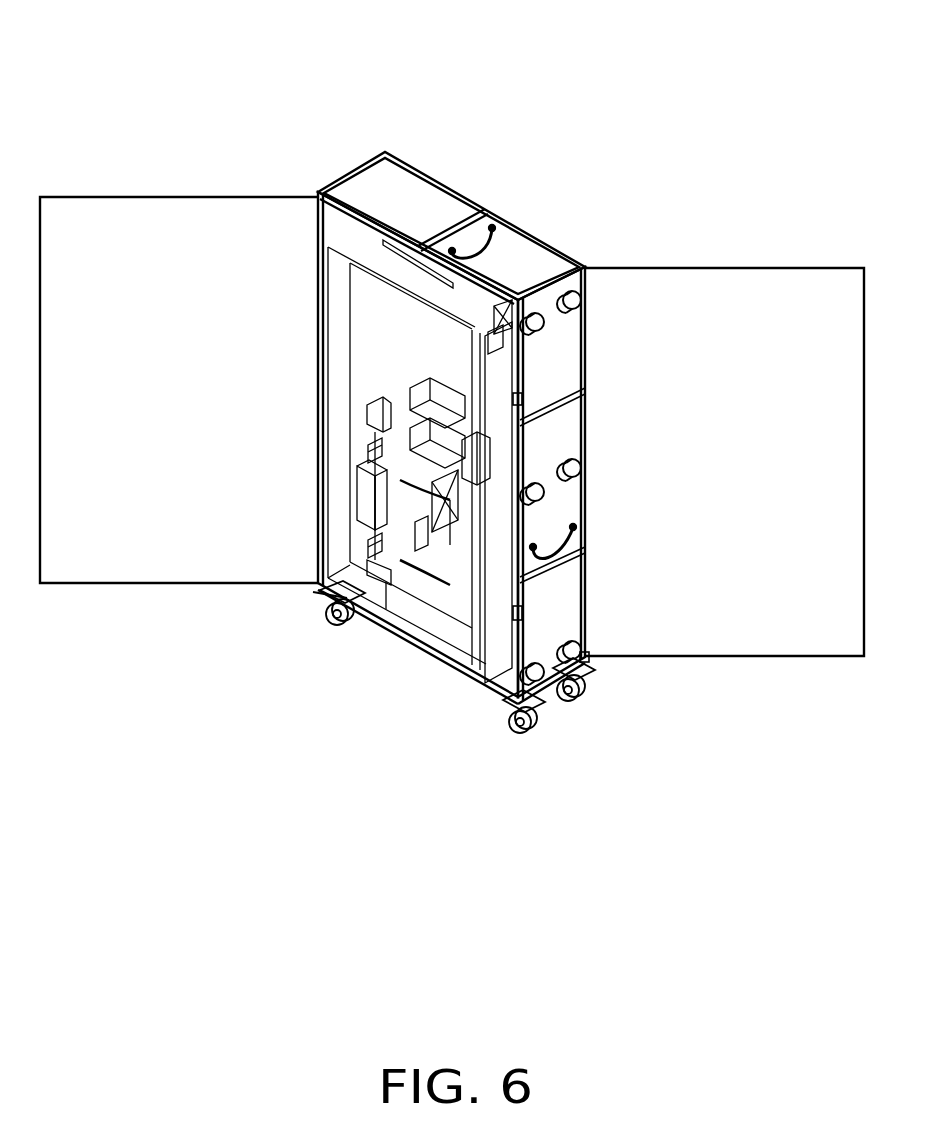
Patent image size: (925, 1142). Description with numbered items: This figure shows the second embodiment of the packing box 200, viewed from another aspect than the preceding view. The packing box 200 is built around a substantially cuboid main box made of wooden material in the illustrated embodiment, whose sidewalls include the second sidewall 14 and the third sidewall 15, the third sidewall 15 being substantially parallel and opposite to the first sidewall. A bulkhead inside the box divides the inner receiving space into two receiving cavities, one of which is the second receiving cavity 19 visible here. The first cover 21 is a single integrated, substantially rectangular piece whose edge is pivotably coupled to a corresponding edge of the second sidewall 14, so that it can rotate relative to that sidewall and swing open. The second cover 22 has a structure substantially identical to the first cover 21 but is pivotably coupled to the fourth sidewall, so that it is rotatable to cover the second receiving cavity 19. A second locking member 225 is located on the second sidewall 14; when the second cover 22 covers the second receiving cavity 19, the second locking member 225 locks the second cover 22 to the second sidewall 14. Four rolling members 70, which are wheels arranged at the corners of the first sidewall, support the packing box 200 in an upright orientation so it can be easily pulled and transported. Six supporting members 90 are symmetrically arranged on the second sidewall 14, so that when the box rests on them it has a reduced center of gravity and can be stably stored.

The packing box 200 is at (152, 48).
The third sidewall 15 is at (388, 190).
The second sidewall 14 is at (553, 325).
The second receiving cavity 19 is at (385, 318).
The second cover 22 is at (162, 220).
The first cover 21 is at (723, 625).
The second locking member 225 is at (513, 613).
The supporting members 90 is at (587, 652).
The rolling members 70 is at (528, 737).